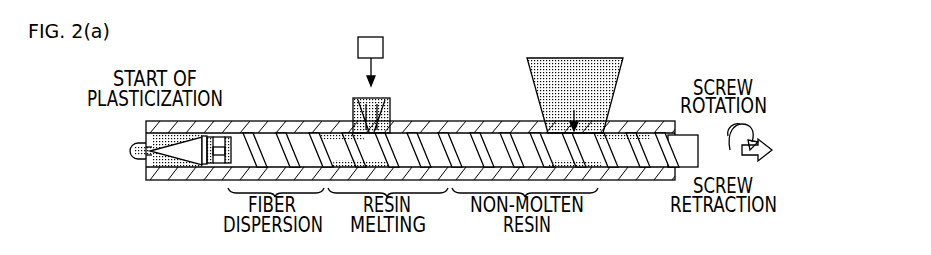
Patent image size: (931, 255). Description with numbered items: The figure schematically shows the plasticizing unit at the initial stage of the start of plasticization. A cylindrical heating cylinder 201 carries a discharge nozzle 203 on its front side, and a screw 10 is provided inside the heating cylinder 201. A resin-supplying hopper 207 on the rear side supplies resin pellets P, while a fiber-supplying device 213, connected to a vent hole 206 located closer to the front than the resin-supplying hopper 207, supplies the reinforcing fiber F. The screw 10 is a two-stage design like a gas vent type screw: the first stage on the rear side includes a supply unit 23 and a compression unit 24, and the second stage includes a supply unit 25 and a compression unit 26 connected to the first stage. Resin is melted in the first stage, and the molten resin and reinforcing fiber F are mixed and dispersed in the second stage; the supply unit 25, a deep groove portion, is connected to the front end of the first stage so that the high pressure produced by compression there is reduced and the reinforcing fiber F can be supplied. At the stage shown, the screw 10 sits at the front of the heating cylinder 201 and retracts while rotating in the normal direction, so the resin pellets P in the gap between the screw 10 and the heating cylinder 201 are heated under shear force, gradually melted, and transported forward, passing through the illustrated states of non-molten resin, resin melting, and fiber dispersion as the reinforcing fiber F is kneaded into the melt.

The screw 10 is at (272, 130).
The heating cylinder 201 is at (227, 122).
The discharge nozzle 203 is at (137, 143).
The supply unit 23 is at (424, 158).
The compression unit 24 is at (523, 147).
The supply unit 25 is at (410, 147).
The compression unit 26 is at (332, 143).
The vent hole 206 is at (355, 98).
The fiber-supplying device 213 is at (384, 50).
The resin-supplying hopper 207 is at (620, 68).
The reinforcing fiber F is at (390, 110).
The resin pellets P is at (573, 78).